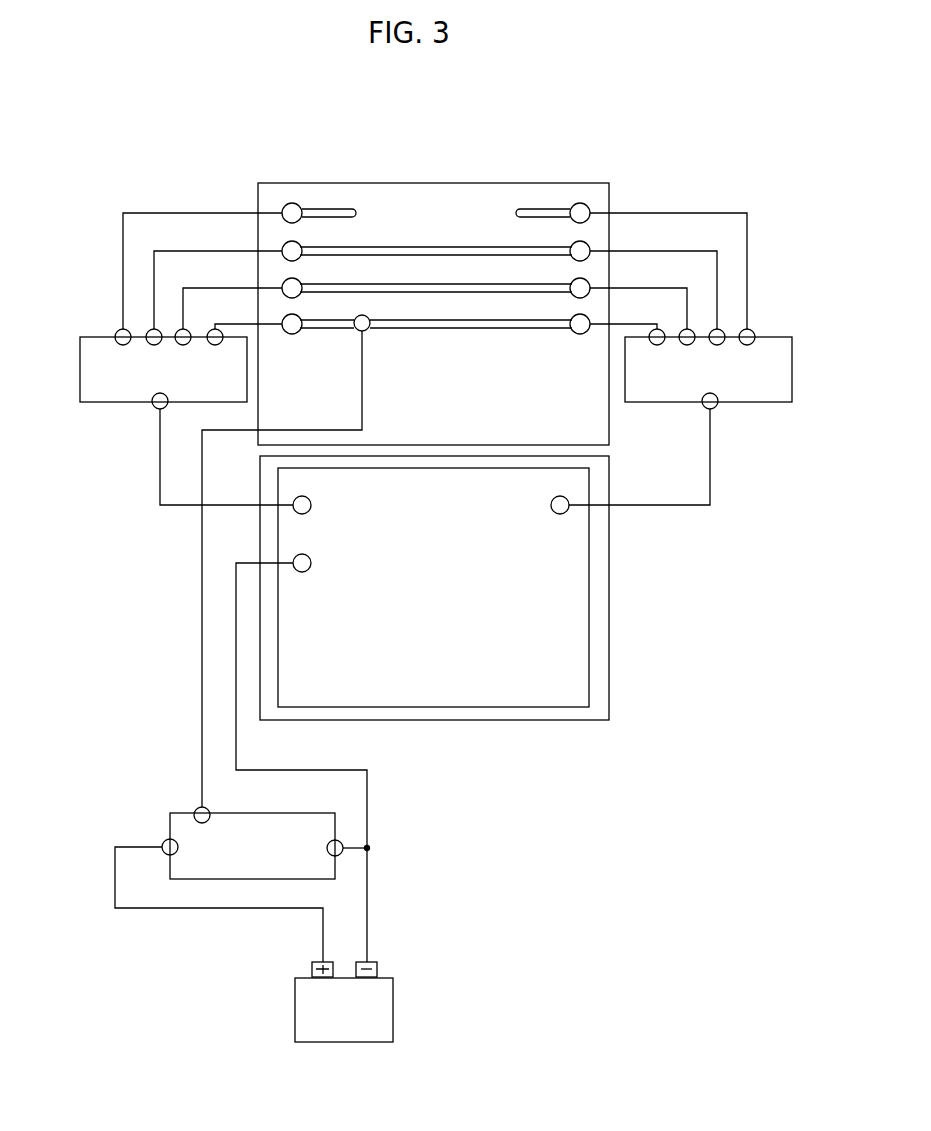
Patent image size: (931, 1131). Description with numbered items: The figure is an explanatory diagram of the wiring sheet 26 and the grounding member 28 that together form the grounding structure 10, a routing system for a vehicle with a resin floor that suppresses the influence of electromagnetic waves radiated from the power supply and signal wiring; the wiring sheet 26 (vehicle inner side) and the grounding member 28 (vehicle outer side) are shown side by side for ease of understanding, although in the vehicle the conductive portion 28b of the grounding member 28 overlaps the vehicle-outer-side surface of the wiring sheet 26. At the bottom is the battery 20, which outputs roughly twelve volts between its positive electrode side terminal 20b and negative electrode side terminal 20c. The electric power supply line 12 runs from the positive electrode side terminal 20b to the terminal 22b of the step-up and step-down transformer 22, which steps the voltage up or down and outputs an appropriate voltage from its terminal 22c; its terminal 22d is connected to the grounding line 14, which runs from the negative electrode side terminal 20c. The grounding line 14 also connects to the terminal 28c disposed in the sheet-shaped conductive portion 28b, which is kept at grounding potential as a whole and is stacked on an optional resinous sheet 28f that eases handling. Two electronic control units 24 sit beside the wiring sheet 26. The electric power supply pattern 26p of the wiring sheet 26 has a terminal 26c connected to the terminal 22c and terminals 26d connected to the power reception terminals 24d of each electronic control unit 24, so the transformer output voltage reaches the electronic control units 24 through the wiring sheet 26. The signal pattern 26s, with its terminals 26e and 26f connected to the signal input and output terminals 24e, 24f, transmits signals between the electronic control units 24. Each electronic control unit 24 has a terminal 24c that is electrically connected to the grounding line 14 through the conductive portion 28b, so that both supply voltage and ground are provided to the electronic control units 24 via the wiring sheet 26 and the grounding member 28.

The grounding structure 10 is at (594, 800).
The electric power supply line 12 is at (113, 880).
The grounding line 14 is at (369, 878).
The battery 20 is at (385, 1020).
The positive electrode side terminal 20b is at (310, 968).
The negative electrode side terminal 20c is at (380, 968).
The step-up and step-down transformer 22 is at (220, 905).
The terminal 22b is at (163, 841).
The terminal 22c is at (196, 808).
The terminal 22d is at (345, 843).
The electronic control unit 24 is at (88, 378).
The terminal 24c is at (155, 408).
The terminal 24d is at (215, 329).
The signal input and output terminal 24e is at (154, 329).
The signal input and output terminal 24f is at (123, 329).
The wiring sheet 26 is at (622, 198).
The terminal 26c is at (368, 331).
The terminal 26d is at (297, 317).
The terminal 26e is at (290, 282).
The terminal 26f is at (291, 247).
The electric power supply pattern 26p is at (475, 330).
The signal pattern 26s is at (462, 252).
The grounding member 28 is at (623, 600).
The conductive portion 28b is at (577, 650).
The terminal 28c is at (312, 565).
The resinous sheet 28f is at (600, 688).